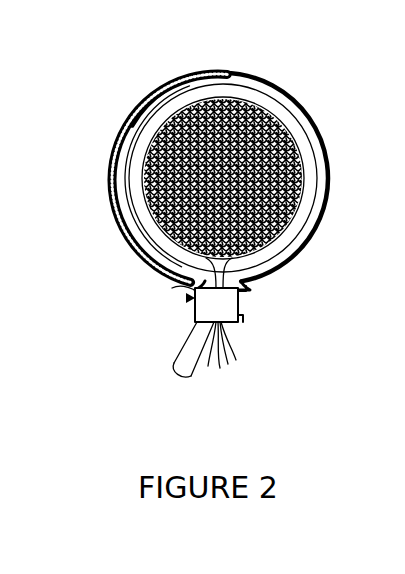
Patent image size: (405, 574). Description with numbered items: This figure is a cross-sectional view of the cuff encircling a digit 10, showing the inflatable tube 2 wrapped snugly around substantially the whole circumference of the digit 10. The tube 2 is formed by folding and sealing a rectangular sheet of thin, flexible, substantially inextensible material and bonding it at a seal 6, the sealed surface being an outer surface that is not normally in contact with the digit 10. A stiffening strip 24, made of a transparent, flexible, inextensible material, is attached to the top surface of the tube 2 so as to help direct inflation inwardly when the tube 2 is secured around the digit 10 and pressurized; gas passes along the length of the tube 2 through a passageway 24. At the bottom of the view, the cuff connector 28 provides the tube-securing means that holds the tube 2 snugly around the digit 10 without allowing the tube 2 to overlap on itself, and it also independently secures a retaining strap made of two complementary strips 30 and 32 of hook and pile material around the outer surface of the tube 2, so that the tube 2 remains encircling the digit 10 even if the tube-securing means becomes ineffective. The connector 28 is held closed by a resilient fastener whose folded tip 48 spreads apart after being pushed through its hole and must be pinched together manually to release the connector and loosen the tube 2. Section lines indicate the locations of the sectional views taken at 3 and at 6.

The inflatable tube 2 is at (213, 357).
The section line 3- 3 is at (222, 134).
The seal 6 is at (283, 327).
The digit 10 is at (282, 176).
The stiffening strip 24 is at (314, 148).
The cuff connector 28 is at (248, 296).
The strip of hook and pile material 30 is at (306, 113).
The strip of hook and pile material 32 is at (127, 238).
The folded tip 48 is at (190, 298).